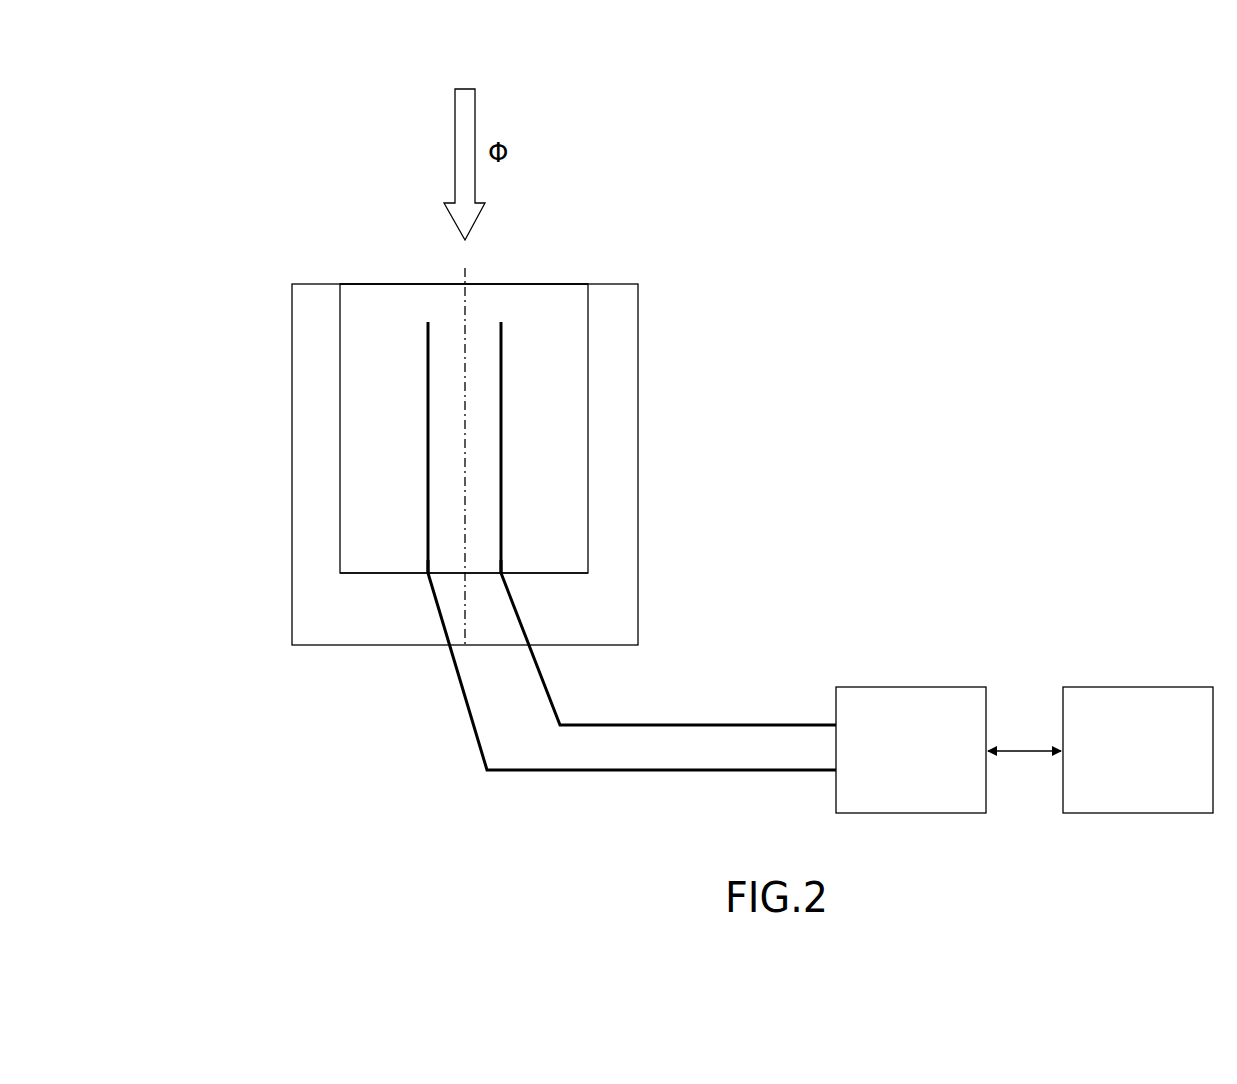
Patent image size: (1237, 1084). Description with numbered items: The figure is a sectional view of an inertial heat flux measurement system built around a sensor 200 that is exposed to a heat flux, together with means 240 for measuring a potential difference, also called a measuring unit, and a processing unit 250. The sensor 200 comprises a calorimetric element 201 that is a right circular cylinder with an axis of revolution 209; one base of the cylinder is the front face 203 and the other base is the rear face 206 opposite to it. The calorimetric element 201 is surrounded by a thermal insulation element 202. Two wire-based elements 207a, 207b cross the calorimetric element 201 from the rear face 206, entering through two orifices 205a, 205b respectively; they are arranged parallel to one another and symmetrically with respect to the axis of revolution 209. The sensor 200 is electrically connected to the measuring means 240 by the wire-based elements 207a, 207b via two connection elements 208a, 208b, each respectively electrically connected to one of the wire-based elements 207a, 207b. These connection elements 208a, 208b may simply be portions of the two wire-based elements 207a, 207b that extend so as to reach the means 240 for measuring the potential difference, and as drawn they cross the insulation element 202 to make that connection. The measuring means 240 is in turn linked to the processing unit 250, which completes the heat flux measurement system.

The sensor 200 is at (701, 511).
The calorimetric element 201 is at (588, 457).
The thermal insulation element 202 is at (638, 597).
The front face 203 is at (530, 284).
The orifice 205a is at (422, 568).
The orifice 205b is at (508, 565).
The rear face 206 is at (379, 577).
The wire-based element 207a is at (428, 420).
The wire-based element 207b is at (501, 420).
The connection element 208a is at (478, 738).
The connection element 208b is at (550, 693).
The axis of revolution 209 is at (462, 282).
The means for measuring a potential difference 240 is at (903, 687).
The processing unit 250 is at (1136, 687).